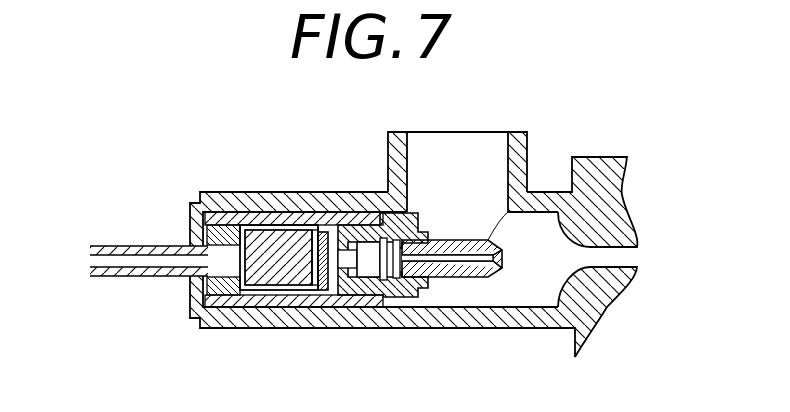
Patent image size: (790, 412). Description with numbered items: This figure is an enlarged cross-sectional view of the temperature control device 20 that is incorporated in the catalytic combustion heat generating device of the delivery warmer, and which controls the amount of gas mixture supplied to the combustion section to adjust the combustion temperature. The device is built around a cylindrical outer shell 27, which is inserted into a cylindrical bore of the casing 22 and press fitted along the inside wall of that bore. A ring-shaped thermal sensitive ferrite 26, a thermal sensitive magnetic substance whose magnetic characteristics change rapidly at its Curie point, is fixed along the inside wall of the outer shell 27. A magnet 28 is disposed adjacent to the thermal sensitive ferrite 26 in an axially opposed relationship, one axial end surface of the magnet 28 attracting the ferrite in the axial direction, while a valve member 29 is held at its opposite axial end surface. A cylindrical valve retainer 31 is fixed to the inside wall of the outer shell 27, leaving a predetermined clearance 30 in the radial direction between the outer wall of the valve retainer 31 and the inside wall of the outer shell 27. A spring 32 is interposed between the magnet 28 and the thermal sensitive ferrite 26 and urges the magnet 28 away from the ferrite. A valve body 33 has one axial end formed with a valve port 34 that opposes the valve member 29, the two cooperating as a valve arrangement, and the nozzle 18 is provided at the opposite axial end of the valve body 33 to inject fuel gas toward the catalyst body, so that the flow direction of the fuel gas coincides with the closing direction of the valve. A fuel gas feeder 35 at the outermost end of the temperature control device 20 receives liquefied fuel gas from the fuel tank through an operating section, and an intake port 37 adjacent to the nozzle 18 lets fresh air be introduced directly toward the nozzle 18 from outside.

The nozzle 18 is at (497, 276).
The temperature control device 20 is at (263, 183).
The casing 22 is at (597, 165).
The thermal sensitive ferrite 26 is at (207, 290).
The outer shell 27 is at (278, 305).
The magnet 28 is at (242, 293).
The valve member 29 is at (325, 291).
The clearance 30 is at (305, 212).
The valve retainer 31 is at (316, 291).
The spring 32 is at (250, 211).
The valve body 33 is at (415, 297).
The valve port 34 is at (333, 211).
The fuel gas feeder 35 is at (118, 252).
The intake port 37 is at (468, 143).